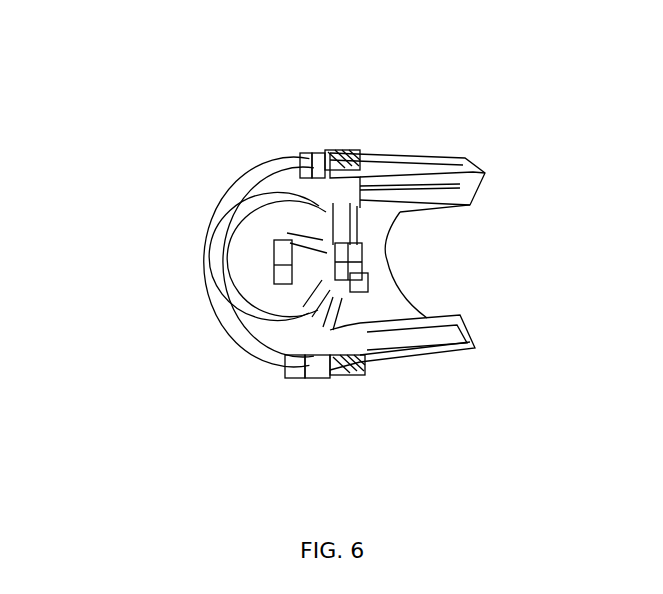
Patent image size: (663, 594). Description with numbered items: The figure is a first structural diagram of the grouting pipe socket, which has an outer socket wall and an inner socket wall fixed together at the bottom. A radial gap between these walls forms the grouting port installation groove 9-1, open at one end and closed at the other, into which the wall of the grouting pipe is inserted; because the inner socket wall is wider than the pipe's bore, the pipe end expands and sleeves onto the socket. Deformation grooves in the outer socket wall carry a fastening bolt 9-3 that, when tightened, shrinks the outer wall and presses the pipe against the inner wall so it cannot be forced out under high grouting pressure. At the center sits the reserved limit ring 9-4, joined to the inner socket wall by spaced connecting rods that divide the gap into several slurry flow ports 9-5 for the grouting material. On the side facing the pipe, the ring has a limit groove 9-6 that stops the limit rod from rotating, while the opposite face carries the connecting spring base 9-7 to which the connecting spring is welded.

The grouting port installation groove 9-1 is at (298, 197).
The fastening bolt 9-3 is at (323, 160).
The reserved limit ring 9-4 is at (350, 266).
The slurry flow port 9-5 is at (302, 287).
The limit groove 9-6 is at (335, 266).
The connecting spring base 9-7 is at (345, 257).